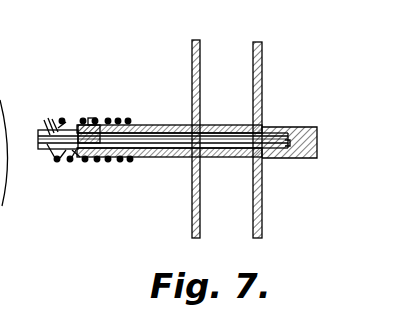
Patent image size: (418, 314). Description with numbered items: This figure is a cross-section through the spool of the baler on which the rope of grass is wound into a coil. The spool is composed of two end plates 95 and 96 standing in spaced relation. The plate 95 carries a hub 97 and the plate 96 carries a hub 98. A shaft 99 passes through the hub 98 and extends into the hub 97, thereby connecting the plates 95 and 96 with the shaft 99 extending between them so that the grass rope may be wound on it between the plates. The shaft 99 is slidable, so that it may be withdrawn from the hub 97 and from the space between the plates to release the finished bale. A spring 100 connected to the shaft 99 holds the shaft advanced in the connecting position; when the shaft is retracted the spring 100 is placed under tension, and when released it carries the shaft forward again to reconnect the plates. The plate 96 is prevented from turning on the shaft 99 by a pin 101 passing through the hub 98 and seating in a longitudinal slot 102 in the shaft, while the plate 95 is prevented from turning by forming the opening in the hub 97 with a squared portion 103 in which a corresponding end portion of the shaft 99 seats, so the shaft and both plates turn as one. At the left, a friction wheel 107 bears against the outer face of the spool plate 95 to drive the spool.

The end plate 95 is at (264, 53).
The end plate 96 is at (197, 40).
The hub 97 is at (303, 127).
The hub 98 is at (149, 124).
The shaft 99 is at (164, 139).
The spring 100 is at (70, 121).
The pin 101 is at (90, 124).
The longitudinal slot 102 is at (79, 152).
The squared portion 103 is at (288, 150).
The friction wheel 107 is at (14, 150).